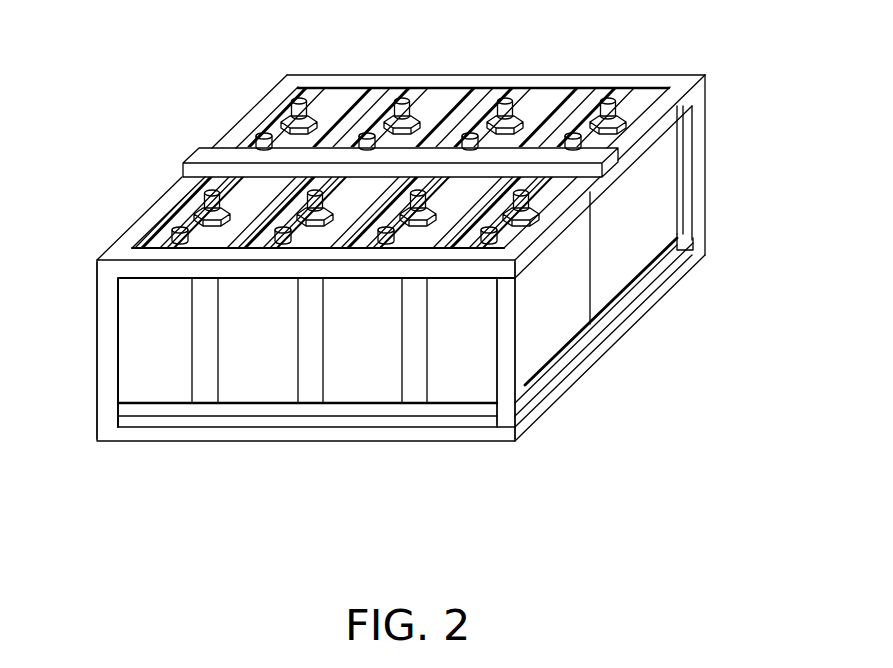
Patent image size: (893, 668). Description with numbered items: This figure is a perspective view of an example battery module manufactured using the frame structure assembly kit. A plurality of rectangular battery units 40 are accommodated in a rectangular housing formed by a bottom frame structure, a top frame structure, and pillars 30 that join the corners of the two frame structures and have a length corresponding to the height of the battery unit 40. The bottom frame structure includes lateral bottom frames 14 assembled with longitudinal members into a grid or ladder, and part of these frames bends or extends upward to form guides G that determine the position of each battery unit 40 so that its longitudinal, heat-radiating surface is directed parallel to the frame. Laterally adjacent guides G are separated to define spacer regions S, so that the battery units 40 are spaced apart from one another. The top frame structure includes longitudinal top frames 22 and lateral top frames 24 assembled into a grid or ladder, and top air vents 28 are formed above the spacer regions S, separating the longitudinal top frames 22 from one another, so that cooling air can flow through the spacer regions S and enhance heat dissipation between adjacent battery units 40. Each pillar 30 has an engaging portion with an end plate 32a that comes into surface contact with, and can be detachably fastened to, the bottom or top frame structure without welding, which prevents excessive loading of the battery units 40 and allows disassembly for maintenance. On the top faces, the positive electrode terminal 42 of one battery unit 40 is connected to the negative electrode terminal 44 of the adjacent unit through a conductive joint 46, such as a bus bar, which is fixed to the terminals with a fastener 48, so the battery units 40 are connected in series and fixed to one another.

The lateral bottom frame 14 is at (355, 420).
The longitudinal top frame 22 is at (268, 104).
The lateral top frame 24 is at (538, 83).
The top air vent 28 is at (480, 84).
The pillar 30 is at (107, 314).
The end plate 32a is at (674, 252).
The battery unit 40 is at (145, 365).
The positive electrode terminal 42 is at (298, 110).
The negative electrode terminal 44 is at (268, 137).
The conductive joint 46 is at (253, 183).
The fastener 48 is at (197, 213).
The spacer region S is at (207, 388).
The guide G is at (473, 410).